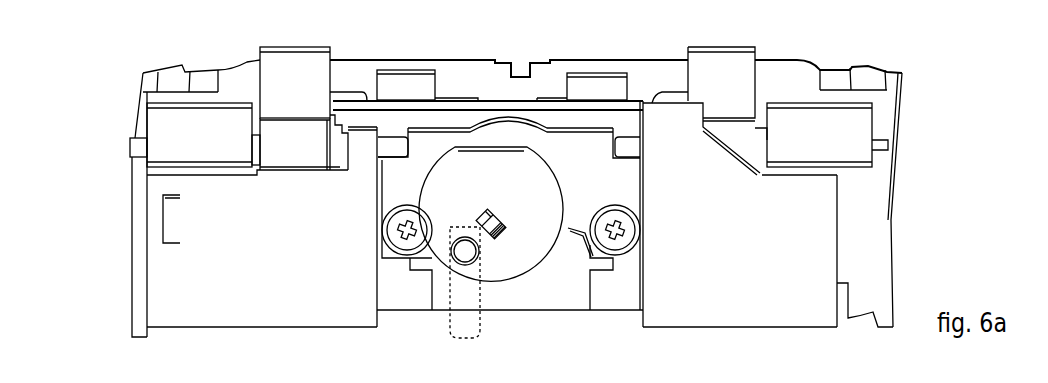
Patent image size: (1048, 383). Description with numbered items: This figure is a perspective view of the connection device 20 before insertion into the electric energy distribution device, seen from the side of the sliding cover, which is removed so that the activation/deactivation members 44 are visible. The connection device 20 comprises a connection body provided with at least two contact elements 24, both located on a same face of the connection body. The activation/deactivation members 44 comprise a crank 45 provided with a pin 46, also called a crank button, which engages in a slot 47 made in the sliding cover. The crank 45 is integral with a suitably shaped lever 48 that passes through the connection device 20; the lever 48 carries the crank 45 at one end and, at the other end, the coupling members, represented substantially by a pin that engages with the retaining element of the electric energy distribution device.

The connection device 20 is at (928, 128).
The contact elements 24 is at (397, 88).
The activation/deactivation members 44 is at (565, 282).
The crank 45 is at (532, 262).
The pin 46 is at (465, 255).
The slot 47 is at (465, 326).
The lever 48 is at (492, 210).